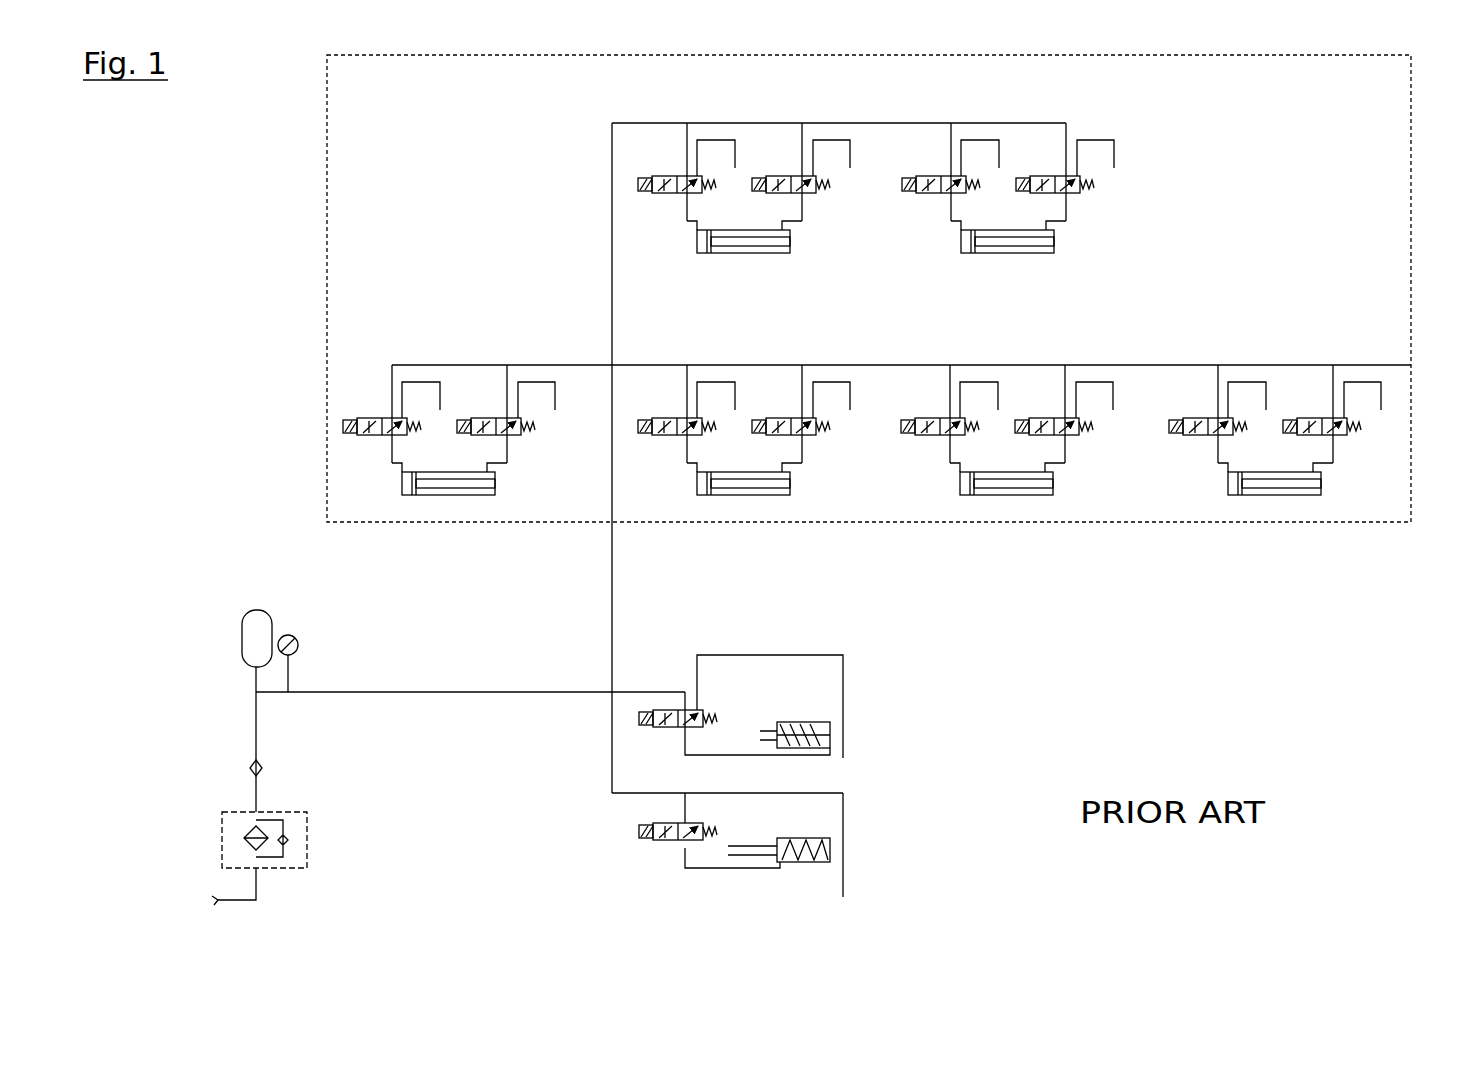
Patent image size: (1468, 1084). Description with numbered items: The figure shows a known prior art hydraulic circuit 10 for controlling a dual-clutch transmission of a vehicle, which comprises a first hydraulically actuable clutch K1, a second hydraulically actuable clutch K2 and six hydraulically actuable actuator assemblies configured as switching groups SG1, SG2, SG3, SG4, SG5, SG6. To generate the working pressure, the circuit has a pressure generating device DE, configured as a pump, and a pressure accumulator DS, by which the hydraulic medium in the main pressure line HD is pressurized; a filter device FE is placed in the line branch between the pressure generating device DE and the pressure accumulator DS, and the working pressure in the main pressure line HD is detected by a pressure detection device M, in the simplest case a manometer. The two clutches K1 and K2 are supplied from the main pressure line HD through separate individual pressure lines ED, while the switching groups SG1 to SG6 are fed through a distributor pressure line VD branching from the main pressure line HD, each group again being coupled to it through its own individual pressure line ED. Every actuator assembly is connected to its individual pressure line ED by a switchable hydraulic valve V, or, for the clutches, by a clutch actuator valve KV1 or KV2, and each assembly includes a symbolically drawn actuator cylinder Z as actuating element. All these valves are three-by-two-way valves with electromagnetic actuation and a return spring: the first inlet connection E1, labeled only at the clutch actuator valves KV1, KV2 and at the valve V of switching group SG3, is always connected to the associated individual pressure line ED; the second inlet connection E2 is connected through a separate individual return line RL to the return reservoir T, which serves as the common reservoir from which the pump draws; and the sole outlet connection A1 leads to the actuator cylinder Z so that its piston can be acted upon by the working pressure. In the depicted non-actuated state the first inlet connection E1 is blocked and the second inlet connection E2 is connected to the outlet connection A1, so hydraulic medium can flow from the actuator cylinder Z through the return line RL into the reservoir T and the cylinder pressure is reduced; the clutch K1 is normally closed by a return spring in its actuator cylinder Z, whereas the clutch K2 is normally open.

The hydraulic circuit 10 is at (212, 208).
The individual pressure line ED is at (766, 123).
The distributor pressure line VD is at (850, 123).
The main pressure line HD is at (350, 692).
The individual return line RL is at (927, 513).
The switchable hydraulic valve V is at (859, 508).
The return reservoir T is at (910, 542).
The actuator cylinder Z is at (876, 552).
The switching group SG1 is at (742, 261).
The switching group SG2 is at (997, 261).
The switching group SG3 is at (450, 507).
The switching group SG4 is at (745, 507).
The switching group SG5 is at (996, 507).
The switching group SG6 is at (1276, 507).
The first inlet connection E1 is at (526, 603).
The second inlet connection E2 is at (569, 605).
The outlet connection A1 is at (575, 654).
The pressure accumulator DS is at (255, 620).
The pressure detection device M is at (292, 636).
The filter device FE is at (210, 828).
The pressure generating device DE is at (218, 902).
The clutch actuator valve KV1 is at (660, 741).
The clutch actuator valve KV2 is at (662, 853).
The first hydraulically actuable clutch K1 is at (805, 720).
The second hydraulically actuable clutch K2 is at (800, 866).